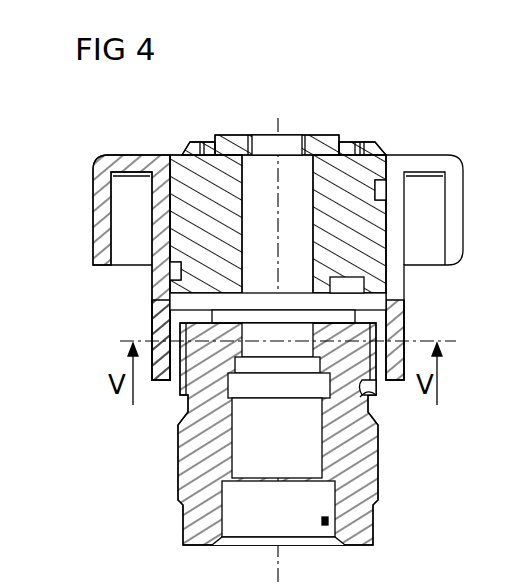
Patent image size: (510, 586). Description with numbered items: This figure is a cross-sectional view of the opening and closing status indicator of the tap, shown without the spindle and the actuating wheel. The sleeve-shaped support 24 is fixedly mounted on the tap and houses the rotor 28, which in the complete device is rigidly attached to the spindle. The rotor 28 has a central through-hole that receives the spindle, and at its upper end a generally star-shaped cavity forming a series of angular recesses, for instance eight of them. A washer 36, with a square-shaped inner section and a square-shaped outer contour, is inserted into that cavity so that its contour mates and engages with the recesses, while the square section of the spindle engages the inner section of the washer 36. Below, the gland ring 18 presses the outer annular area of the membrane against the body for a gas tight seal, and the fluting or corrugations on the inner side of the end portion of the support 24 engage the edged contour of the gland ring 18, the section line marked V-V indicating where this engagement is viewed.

The gland ring 18 is at (193, 460).
The sleeve-shaped support 24 is at (93, 192).
The rotor 28 is at (176, 165).
The washer 36 is at (235, 146).